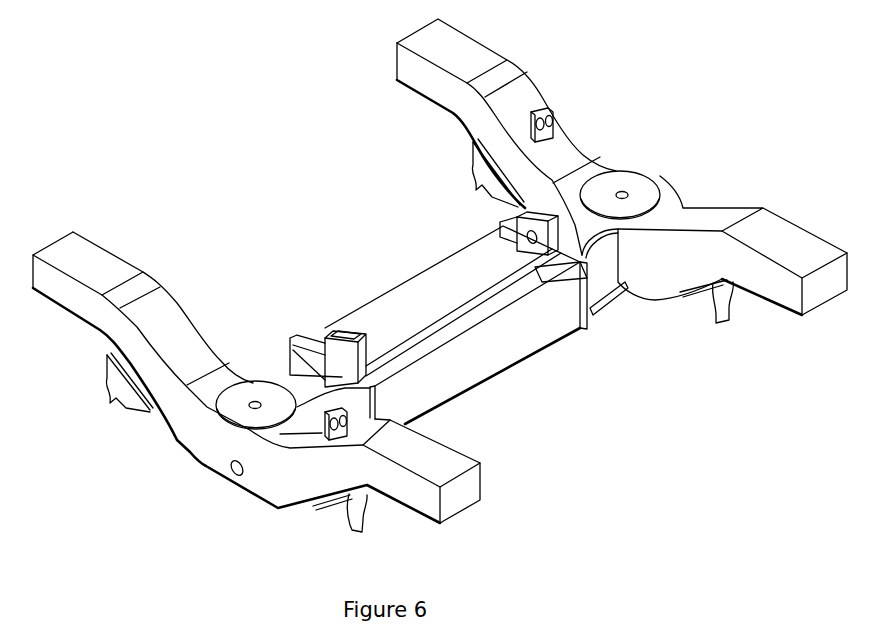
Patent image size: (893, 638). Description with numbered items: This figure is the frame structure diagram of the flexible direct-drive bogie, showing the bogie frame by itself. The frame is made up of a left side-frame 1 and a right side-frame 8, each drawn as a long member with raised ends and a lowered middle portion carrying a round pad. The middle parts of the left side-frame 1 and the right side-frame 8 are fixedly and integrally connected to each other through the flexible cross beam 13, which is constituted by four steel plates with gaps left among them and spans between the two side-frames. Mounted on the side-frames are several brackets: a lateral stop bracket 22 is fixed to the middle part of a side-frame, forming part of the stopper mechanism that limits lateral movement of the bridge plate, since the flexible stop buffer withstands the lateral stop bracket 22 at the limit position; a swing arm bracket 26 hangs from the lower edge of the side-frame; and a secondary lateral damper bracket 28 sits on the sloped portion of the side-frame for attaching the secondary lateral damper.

The left side-frame 1 is at (697, 223).
The right side-frame 8 is at (298, 478).
The flexible cross beam 13 is at (510, 340).
The lateral stop bracket 22 is at (500, 230).
The swing arm bracket 26 is at (700, 300).
The secondary lateral damper bracket 28 is at (553, 117).